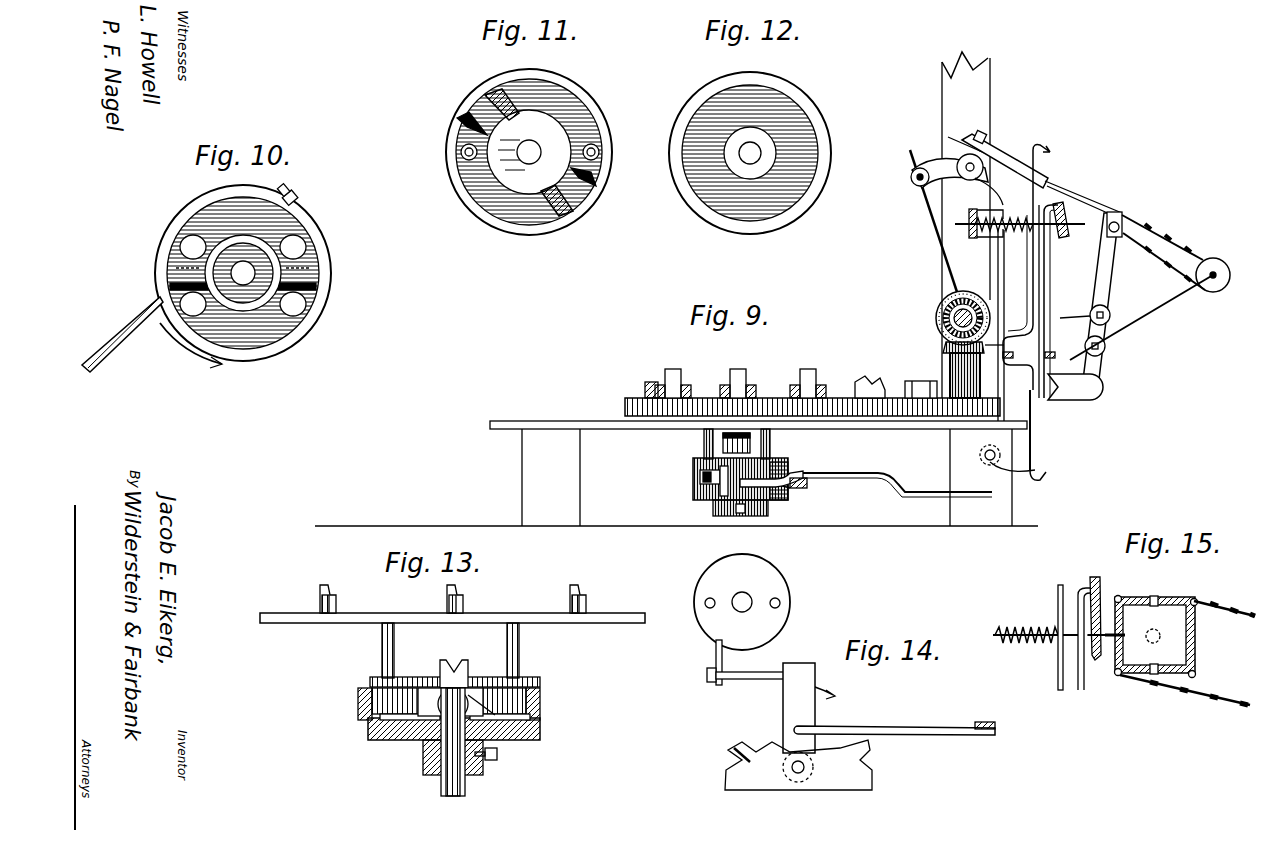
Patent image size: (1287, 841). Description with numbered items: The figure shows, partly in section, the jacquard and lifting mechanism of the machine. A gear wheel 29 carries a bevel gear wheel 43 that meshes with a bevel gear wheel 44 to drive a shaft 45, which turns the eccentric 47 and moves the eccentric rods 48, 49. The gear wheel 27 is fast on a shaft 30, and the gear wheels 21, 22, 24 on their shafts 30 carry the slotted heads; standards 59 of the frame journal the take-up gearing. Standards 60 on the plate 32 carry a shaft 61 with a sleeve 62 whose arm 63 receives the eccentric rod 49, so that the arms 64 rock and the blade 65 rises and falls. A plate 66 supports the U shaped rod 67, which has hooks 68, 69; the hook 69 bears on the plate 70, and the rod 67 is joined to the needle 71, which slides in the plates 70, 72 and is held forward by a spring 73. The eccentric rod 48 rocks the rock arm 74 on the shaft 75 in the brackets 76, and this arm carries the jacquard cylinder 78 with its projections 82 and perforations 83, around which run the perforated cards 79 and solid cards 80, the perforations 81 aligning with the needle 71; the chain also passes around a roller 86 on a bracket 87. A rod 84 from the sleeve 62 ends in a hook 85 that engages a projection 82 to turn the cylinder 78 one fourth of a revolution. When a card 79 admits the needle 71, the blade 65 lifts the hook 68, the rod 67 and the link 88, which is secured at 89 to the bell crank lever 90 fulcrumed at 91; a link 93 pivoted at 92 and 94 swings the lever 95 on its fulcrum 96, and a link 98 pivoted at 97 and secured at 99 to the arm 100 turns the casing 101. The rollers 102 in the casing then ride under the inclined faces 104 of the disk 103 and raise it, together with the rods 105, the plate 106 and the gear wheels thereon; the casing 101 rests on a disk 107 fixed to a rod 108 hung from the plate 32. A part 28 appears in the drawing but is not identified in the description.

In FIG. 9, the gear wheel 21 is at (724, 398).
In FIG. 9, the gear wheel 22 is at (840, 398).
In FIG. 9, the gear wheel 24 is at (646, 392).
In FIG. 9, the gear wheel 27 is at (862, 380).
In FIG. 9, the cam block 28 is at (915, 388).
In FIG. 9, the gear wheel 29 is at (952, 392).
In FIG. 9, the shaft 30 is at (673, 370).
In FIG. 13, the shaft 30 is at (330, 592).
In FIG. 9, the plate 32 is at (520, 425).
In FIG. 14, the plate 32 is at (745, 762).
In FIG. 9, the bevel gear wheel 43 is at (945, 348).
In FIG. 9, the bevel gear wheel 44 is at (940, 318).
In FIG. 9, the shaft 45 is at (954, 323).
In FIG. 9, the eccentric 47 is at (950, 302).
In FIG. 9, the eccentric rod 48 is at (1084, 307).
In FIG. 9, the eccentric rod 49 is at (930, 215).
In FIG. 9, the standards 59 is at (970, 70).
In FIG. 9, the standards 60 is at (997, 192).
In FIG. 9, the shaft 61 is at (967, 176).
In FIG. 9, the sleeve 62 is at (985, 150).
In FIG. 9, the arm 63 is at (940, 168).
In FIG. 9, the arms 64 is at (1010, 165).
In FIG. 9, the blade 65 is at (1048, 178).
In FIG. 9, the plate 66 is at (1086, 348).
In FIG. 9, the U shaped rod 67 is at (1036, 277).
In FIG. 15, the U shaped rod 67 is at (1060, 688).
In FIG. 9, the hook 68 is at (1038, 147).
In FIG. 9, the hook 69 is at (1050, 222).
In FIG. 15, the hook 69 is at (1080, 600).
In FIG. 9, the plate 70 is at (1060, 232).
In FIG. 15, the plate 70 is at (1097, 585).
In FIG. 9, the needle 71 is at (1069, 219).
In FIG. 15, the needle 71 is at (1135, 652).
In FIG. 9, the plate 72 is at (972, 240).
In FIG. 9, the spring 73 is at (1000, 234).
In FIG. 15, the spring 73 is at (1064, 623).
In FIG. 9, the rock arm 74 is at (1108, 280).
In FIG. 9, the shaft 75 is at (1100, 390).
In FIG. 9, the brackets 76 is at (1078, 400).
In FIG. 9, the jacquard cylinder 78 is at (1124, 228).
In FIG. 15, the jacquard cylinder 78 is at (1195, 633).
In FIG. 9, the perforated cards 79 is at (1165, 250).
In FIG. 15, the perforated cards 79 is at (1230, 603).
In FIG. 9, the solid cards 80 is at (1210, 260).
In FIG. 15, the solid cards 80 is at (1232, 702).
In FIG. 15, the perforations 81 is at (1116, 635).
In FIG. 15, the projections 82 is at (1122, 598).
In FIG. 15, the perforations 83 is at (1158, 626).
In FIG. 9, the rod 84 is at (1112, 212).
In FIG. 9, the hook 85 is at (1122, 214).
In FIG. 9, the roller 86 is at (1215, 292).
In FIG. 9, the bracket 87 is at (1140, 318).
In FIG. 9, the link 88 is at (1033, 440).
In FIG. 9, the securing point 89 is at (1046, 472).
In FIG. 9, the bell crank lever 90 is at (1036, 480).
In FIG. 14, the bell crank lever 90 is at (985, 722).
In FIG. 9, the fulcrum 91 is at (984, 456).
In FIG. 9, the pivot 92 is at (990, 498).
In FIG. 14, the pivot 92 is at (995, 732).
In FIG. 9, the link 93 is at (897, 476).
In FIG. 14, the link 93 is at (894, 720).
In FIG. 9, the pivot 94 is at (803, 474).
In FIG. 14, the pivot 94 is at (803, 728).
In FIG. 9, the lever 95 is at (808, 484).
In FIG. 14, the lever 95 is at (795, 710).
In FIG. 14, the fulcrum 96 is at (798, 774).
In FIG. 9, the pivot 97 is at (786, 476).
In FIG. 14, the pivot 97 is at (800, 664).
In FIG. 9, the link 98 is at (770, 498).
In FIG. 14, the link 98 is at (775, 687).
In FIG. 9, the securing point 99 is at (703, 478).
In FIG. 14, the securing point 99 is at (708, 680).
In FIG. 10, the arm 100 is at (190, 277).
In FIG. 9, the arm 100 is at (710, 494).
In FIG. 13, the arm 100 is at (358, 695).
In FIG. 14, the arm 100 is at (716, 650).
In FIG. 10, the casing 101 is at (322, 318).
In FIG. 9, the casing 101 is at (790, 492).
In FIG. 13, the casing 101 is at (542, 700).
In FIG. 10, the rollers 102 is at (190, 272).
In FIG. 13, the rollers 102 is at (445, 708).
In FIG. 11, the disk 103 is at (520, 152).
In FIG. 9, the disk 103 is at (693, 466).
In FIG. 13, the disk 103 is at (375, 682).
In FIG. 14, the disk 103 is at (742, 602).
In FIG. 11, the inclined faces 104 is at (496, 95).
In FIG. 13, the inclined faces 104 is at (440, 690).
In FIG. 11, the rods 105 is at (461, 152).
In FIG. 9, the rods 105 is at (706, 446).
In FIG. 13, the rods 105 is at (386, 640).
In FIG. 14, the rods 105 is at (706, 600).
In FIG. 9, the plate 106 is at (626, 408).
In FIG. 13, the plate 106 is at (452, 606).
In FIG. 12, the disk 107 is at (715, 210).
In FIG. 9, the disk 107 is at (720, 506).
In FIG. 13, the disk 107 is at (542, 730).
In FIG. 9, the rod 108 is at (723, 445).
In FIG. 13, the rod 108 is at (448, 782).
In FIG. 14, the rod 108 is at (743, 595).